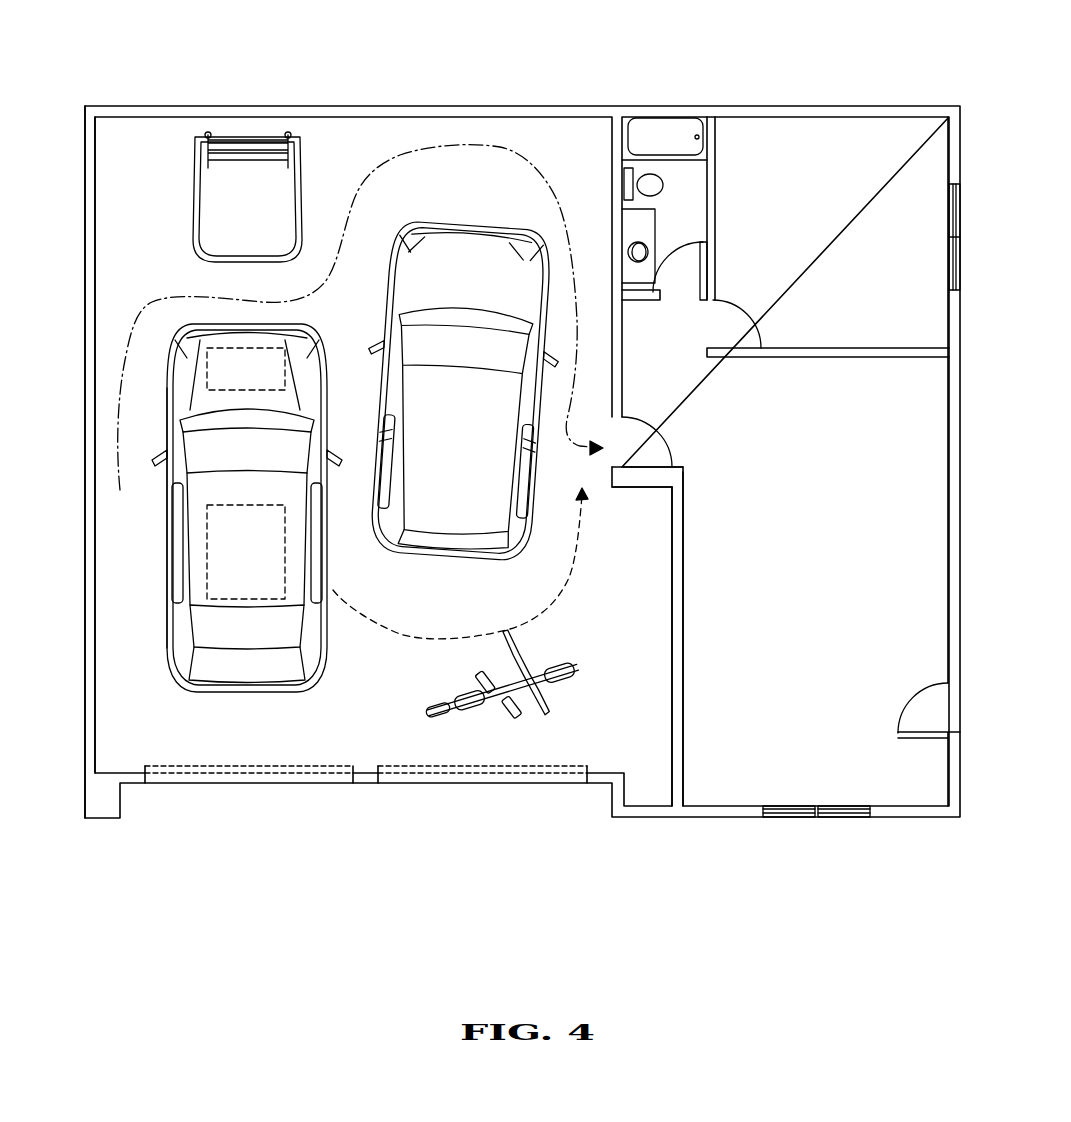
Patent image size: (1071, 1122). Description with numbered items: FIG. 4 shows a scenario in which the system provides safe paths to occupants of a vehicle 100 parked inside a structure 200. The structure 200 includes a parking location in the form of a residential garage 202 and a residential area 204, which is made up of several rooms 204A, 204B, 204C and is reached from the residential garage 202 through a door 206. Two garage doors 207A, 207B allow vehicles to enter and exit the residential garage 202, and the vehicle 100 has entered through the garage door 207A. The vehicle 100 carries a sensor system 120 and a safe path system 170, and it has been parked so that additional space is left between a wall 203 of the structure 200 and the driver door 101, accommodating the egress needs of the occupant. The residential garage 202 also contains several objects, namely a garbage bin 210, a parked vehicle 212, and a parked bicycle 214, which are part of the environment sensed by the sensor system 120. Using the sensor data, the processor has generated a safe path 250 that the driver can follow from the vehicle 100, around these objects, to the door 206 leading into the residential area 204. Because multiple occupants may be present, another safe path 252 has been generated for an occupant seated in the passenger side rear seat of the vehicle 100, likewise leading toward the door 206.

The vehicle 100 is at (336, 547).
The driver door 101 is at (158, 545).
The sensor system 120 is at (232, 345).
The safe path system 170 is at (257, 600).
The structure 200 is at (579, 72).
The residential garage 202 is at (332, 151).
The wall 203 is at (96, 212).
The residential area 204 is at (958, 96).
The room 204A is at (692, 218).
The room 204B is at (858, 322).
The room 204C is at (743, 765).
The door 206 is at (640, 439).
The garage door 207A is at (340, 783).
The garage door 207B is at (546, 783).
The garbage bin 210 is at (240, 175).
The parked vehicle 212 is at (455, 247).
The parked bicycle 214 is at (588, 668).
The safe path 250 is at (476, 143).
The safe path 252 is at (430, 642).